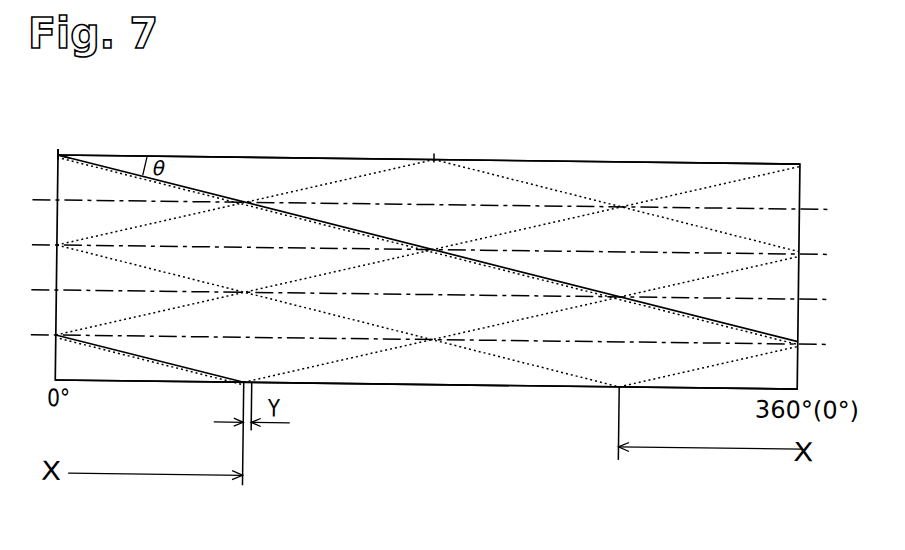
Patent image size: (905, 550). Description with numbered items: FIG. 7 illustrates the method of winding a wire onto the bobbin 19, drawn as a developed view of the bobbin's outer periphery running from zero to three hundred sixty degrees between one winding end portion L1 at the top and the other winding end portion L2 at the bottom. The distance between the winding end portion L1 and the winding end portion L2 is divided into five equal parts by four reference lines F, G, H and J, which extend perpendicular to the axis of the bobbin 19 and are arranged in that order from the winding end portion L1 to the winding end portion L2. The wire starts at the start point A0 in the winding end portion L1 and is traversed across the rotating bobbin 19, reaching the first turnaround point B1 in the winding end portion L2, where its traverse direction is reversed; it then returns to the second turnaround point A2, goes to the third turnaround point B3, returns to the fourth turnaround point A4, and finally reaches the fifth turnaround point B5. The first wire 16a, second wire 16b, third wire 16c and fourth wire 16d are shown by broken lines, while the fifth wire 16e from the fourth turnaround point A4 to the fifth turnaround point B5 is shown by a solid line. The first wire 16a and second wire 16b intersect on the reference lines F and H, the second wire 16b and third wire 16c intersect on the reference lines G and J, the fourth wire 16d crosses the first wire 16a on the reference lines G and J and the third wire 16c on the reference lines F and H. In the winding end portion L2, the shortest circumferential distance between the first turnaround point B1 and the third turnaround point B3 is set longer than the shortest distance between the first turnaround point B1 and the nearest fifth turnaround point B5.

The first wire 16a is at (135, 354).
The second wire 16b is at (329, 361).
The third wire 16c is at (540, 362).
The fourth wire 16d is at (705, 361).
The fifth wire 16e is at (196, 187).
The bobbin 19 is at (786, 371).
The start point A0 is at (56, 141).
The second turnaround point A2 is at (435, 144).
The fourth turnaround point A4 is at (72, 158).
The first turnaround point B1 is at (242, 449).
The third turnaround point B3 is at (619, 440).
The fifth turnaround point B5 is at (259, 424).
The reference line F is at (439, 205).
The reference line G is at (440, 250).
The reference line H is at (439, 295).
The reference line J is at (438, 340).
The one winding end portion L1 is at (407, 161).
The other winding end portion L2 is at (404, 381).